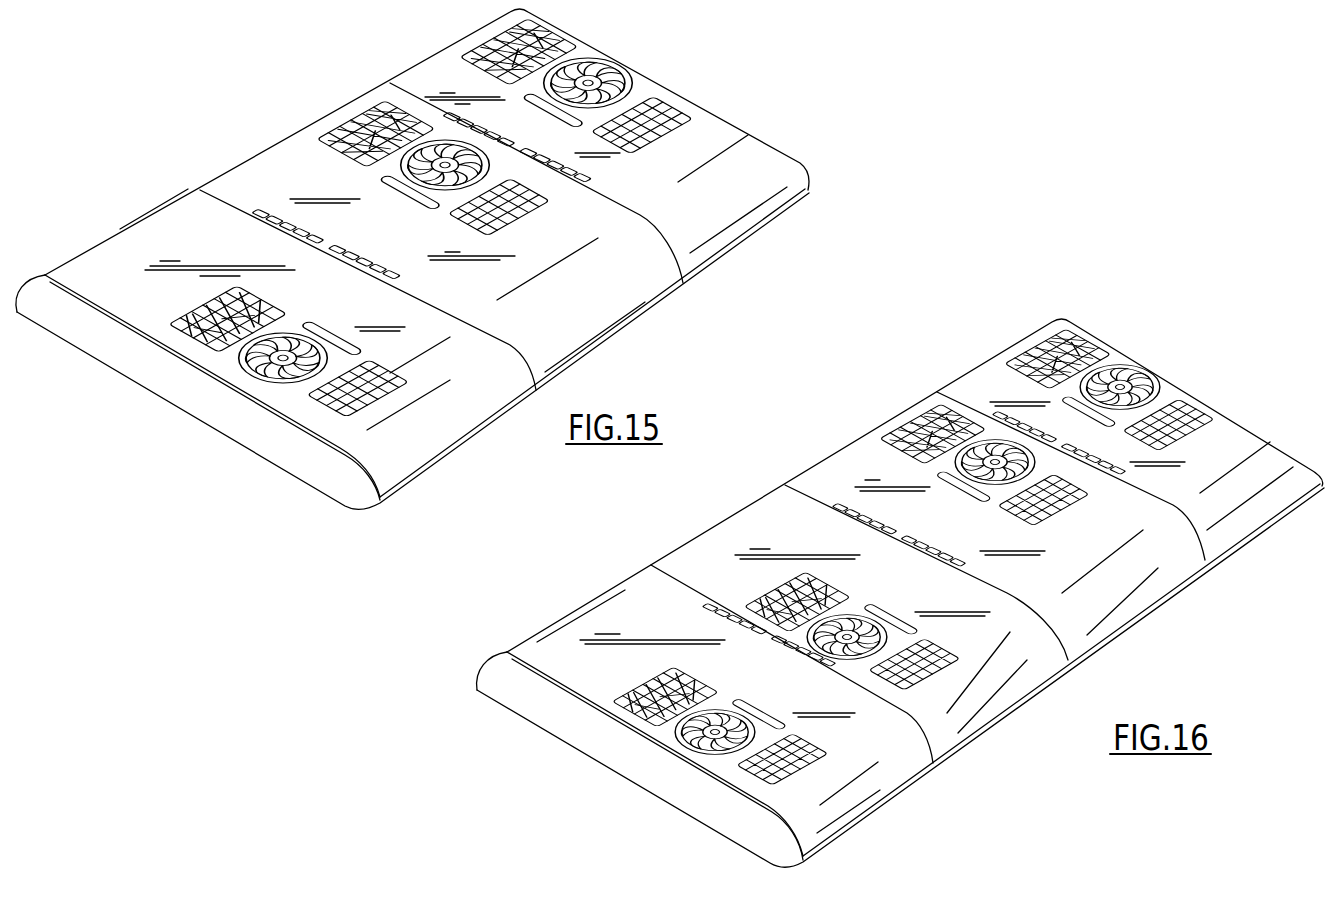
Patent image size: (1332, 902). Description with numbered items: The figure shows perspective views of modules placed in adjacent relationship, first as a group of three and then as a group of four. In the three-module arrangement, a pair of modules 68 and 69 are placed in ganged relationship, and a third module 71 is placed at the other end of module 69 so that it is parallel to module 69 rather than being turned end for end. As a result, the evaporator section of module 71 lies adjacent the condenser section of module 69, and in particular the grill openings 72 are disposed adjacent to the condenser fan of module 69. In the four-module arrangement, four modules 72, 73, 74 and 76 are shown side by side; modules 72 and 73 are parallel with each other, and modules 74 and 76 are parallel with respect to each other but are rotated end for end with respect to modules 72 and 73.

In FIG. 15, the module 68 is at (425, 433).
In FIG. 15, the module 69 is at (597, 302).
In FIG. 15, the third module 71 is at (723, 212).
In FIG. 15, the grill opening 72 is at (558, 160).
In FIG. 16, the grill opening 72 is at (853, 790).
In FIG. 16, the module 73 is at (988, 685).
In FIG. 16, the module 74 is at (1105, 607).
In FIG. 16, the module 76 is at (1228, 505).